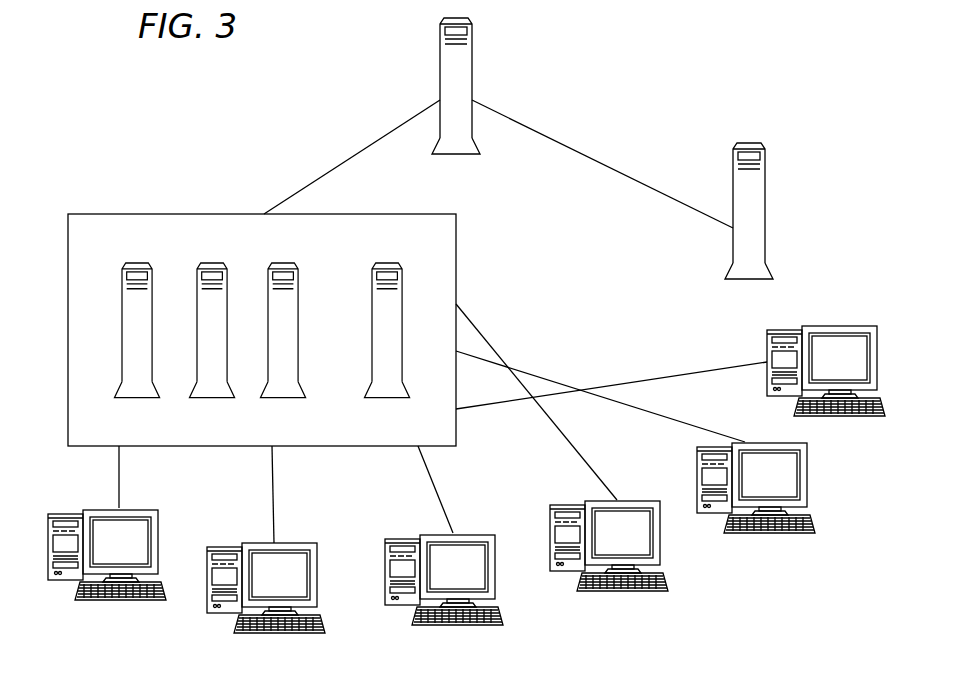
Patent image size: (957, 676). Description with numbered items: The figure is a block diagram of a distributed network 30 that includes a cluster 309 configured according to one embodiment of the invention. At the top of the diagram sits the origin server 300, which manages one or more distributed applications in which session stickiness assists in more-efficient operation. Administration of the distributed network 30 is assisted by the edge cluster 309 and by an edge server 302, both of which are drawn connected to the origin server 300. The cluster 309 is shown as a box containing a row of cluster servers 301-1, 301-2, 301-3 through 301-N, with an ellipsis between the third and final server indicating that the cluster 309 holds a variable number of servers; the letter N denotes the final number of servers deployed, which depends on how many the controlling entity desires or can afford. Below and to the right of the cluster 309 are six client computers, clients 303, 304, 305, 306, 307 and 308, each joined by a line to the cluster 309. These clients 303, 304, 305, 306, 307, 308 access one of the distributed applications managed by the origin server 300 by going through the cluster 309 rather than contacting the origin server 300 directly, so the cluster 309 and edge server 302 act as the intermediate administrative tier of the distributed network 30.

The distributed network 30 is at (217, 138).
The origin server 300 is at (472, 67).
The edge server 302 is at (767, 208).
The cluster 309 is at (115, 249).
The cluster server 301-1 is at (136, 345).
The cluster server 301-2 is at (212, 345).
The cluster server 301-3 is at (286, 345).
The cluster server 301-N is at (388, 345).
The client 303 is at (123, 598).
The client 304 is at (317, 548).
The client 305 is at (494, 583).
The client 306 is at (605, 589).
The client 307 is at (757, 531).
The client 308 is at (832, 418).